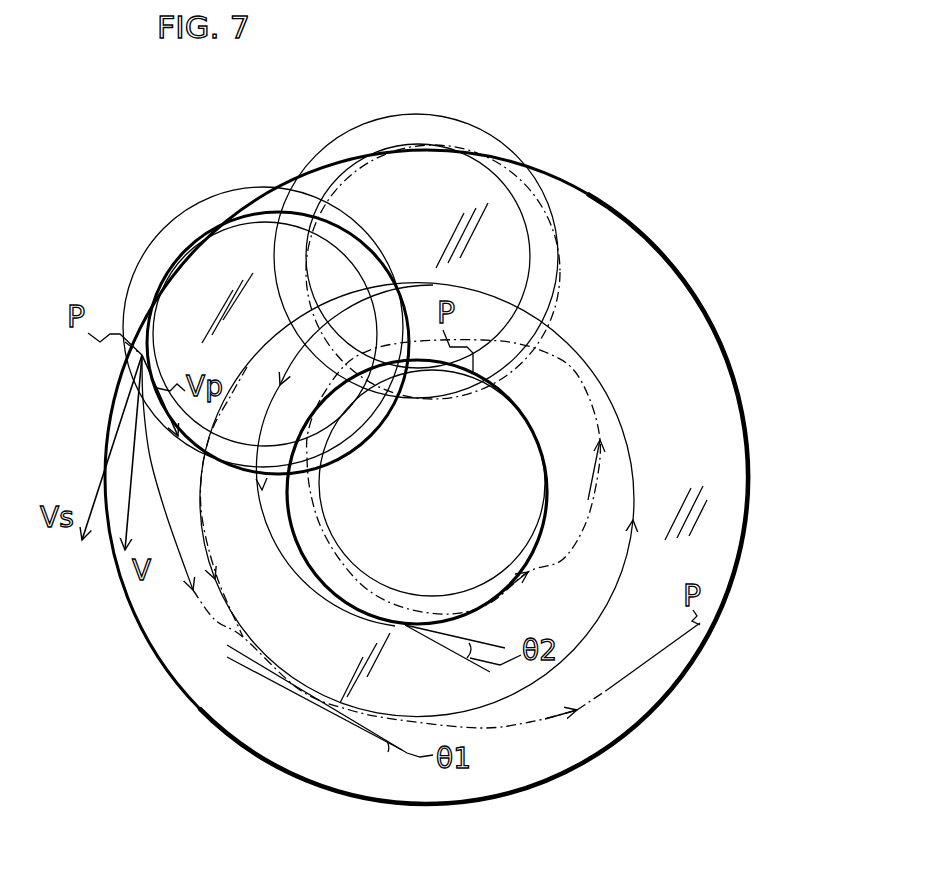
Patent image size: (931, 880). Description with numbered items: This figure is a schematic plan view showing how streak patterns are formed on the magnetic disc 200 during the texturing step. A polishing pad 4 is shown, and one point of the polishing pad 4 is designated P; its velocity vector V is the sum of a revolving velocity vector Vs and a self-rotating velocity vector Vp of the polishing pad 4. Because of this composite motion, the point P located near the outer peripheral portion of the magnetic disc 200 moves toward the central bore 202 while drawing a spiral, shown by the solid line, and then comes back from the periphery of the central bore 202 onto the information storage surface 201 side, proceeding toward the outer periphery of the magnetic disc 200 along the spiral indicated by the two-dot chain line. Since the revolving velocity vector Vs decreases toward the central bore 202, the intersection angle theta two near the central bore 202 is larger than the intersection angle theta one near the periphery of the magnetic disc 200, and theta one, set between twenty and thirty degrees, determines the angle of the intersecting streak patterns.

The polishing pad 4 is at (497, 120).
The magnetic disc 200 is at (445, 477).
The information storage surface 201 is at (742, 430).
The central bore 202 is at (512, 437).